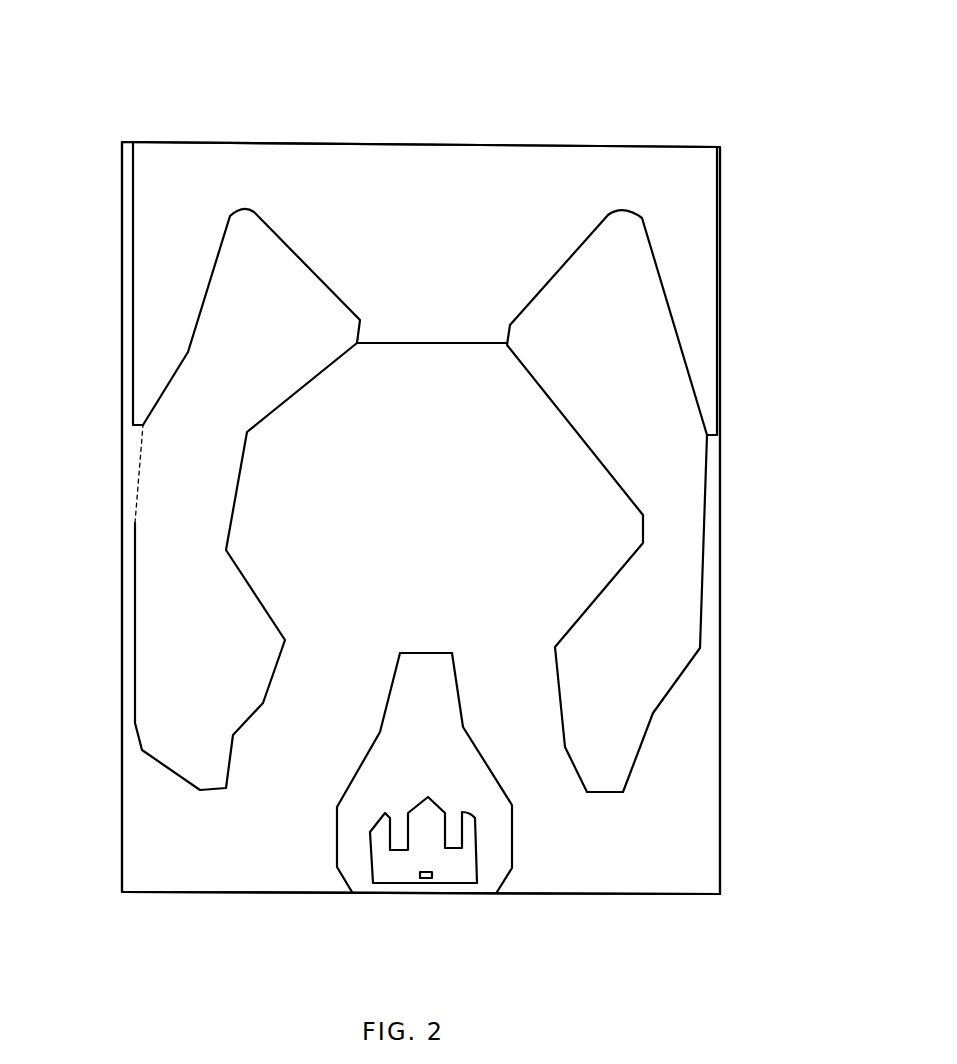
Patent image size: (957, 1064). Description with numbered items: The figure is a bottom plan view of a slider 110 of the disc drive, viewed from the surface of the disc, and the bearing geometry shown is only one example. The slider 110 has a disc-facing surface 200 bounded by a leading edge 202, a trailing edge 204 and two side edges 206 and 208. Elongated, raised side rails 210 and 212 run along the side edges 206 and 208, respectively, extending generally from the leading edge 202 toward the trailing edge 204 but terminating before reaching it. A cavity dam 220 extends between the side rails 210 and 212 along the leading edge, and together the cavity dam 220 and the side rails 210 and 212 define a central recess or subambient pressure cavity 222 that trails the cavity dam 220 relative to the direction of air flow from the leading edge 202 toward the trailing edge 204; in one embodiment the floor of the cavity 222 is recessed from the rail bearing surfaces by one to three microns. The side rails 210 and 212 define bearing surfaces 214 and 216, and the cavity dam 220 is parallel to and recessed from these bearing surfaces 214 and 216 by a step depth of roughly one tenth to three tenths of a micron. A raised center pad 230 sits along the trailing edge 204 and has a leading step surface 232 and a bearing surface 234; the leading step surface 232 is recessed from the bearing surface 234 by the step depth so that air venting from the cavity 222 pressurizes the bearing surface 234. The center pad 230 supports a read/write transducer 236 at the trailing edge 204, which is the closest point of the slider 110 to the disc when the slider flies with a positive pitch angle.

The slider 110 is at (615, 98).
The disc-facing surface 200 is at (165, 255).
The leading edge 202 is at (262, 145).
The trailing edge 204 is at (243, 893).
The side edge 206 is at (733, 338).
The side edge 208 is at (120, 388).
The side rail 210 is at (657, 322).
The side rail 212 is at (210, 353).
The bearing surface 214 is at (680, 490).
The bearing surface 216 is at (173, 488).
The cavity dam 220 is at (433, 193).
The subambient pressure cavity 222 is at (441, 493).
The center pad 230 is at (470, 692).
The leading step surface 232 is at (422, 675).
The bearing surface 234 is at (383, 860).
The read/write transducer 236 is at (433, 874).